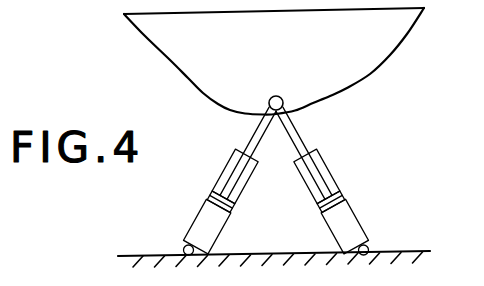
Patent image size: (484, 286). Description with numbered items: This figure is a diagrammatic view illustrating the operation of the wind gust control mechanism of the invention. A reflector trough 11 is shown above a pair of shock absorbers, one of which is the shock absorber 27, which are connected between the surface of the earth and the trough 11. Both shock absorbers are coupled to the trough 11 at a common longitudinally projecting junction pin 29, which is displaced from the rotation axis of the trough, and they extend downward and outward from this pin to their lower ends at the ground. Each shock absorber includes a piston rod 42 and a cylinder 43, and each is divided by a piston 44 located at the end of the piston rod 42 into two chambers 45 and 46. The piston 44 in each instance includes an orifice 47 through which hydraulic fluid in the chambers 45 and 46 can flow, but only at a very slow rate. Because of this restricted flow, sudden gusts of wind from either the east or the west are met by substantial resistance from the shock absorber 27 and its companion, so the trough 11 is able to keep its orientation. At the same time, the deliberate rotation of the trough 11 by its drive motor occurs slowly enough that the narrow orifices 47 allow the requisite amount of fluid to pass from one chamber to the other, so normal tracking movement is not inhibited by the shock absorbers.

The reflector trough 11 is at (373, 81).
The junction pin 29 is at (279, 96).
The piston rod 42 is at (258, 126).
The chamber 45 is at (228, 164).
The orifice 47 is at (207, 204).
The piston 44 is at (232, 207).
The cylinder 43 is at (215, 241).
The chamber 46 is at (196, 221).
The shock absorber 27 is at (367, 189).